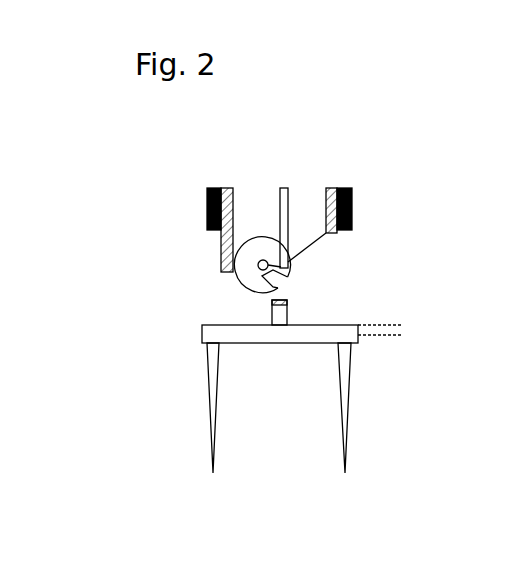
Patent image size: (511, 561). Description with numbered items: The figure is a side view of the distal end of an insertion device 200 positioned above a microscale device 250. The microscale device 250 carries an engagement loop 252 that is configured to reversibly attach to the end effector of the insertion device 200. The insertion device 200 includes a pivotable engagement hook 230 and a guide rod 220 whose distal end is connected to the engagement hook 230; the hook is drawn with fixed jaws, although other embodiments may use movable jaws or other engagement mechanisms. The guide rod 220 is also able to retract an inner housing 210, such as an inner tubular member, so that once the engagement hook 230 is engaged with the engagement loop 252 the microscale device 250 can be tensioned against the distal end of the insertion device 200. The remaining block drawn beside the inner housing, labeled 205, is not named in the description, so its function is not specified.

The insertion device 200 is at (217, 147).
The left jaw block 205 is at (200, 197).
The inner housing 210 is at (233, 180).
The guide rod 220 is at (298, 197).
The pivotable engagement hook 230 is at (290, 277).
The microscale device 250 is at (365, 360).
The engagement loop 252 is at (265, 312).